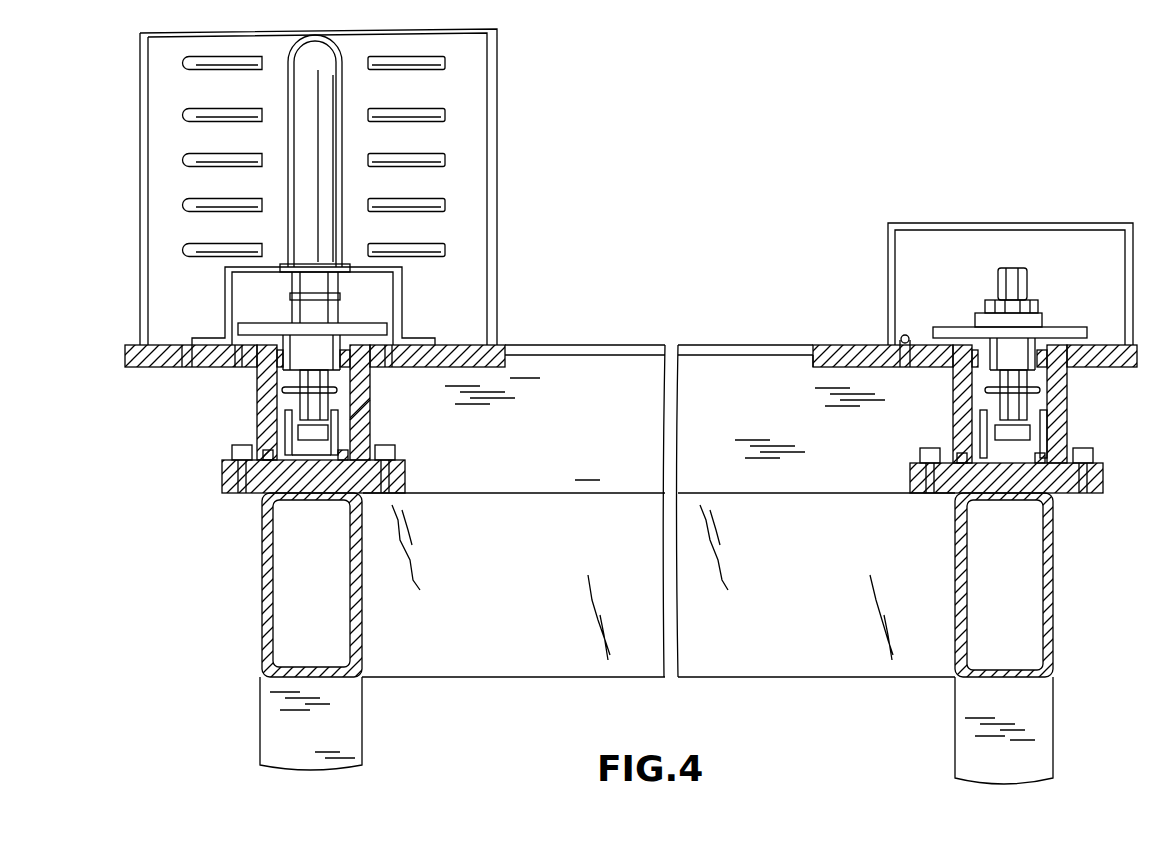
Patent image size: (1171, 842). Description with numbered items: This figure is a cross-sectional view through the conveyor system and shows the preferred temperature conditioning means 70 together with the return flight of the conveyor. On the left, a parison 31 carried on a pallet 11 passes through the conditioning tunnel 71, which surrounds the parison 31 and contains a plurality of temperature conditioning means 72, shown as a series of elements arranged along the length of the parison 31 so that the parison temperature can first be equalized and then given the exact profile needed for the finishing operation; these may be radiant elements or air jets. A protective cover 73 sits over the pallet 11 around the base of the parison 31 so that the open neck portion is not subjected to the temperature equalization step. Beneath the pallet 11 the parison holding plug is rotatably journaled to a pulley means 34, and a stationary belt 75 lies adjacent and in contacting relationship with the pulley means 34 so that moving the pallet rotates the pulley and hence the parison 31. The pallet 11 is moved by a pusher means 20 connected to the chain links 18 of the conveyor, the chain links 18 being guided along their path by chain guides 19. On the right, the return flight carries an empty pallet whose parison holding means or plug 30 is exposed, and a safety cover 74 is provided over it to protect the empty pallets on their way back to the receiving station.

The temperature conditioning means 70 is at (498, 118).
The conditioning tunnel 71 is at (140, 163).
The temperature conditioning means 72 is at (185, 113).
The parison 31 is at (342, 104).
The protective cover 73 is at (405, 306).
The pallet 11 is at (265, 323).
The pulley means 34 is at (257, 408).
The stationary belt 75 is at (338, 390).
The chain guide 19 is at (263, 448).
The chain link 18 is at (370, 426).
The safety cover 74 is at (888, 270).
The parison holding means 30 is at (998, 282).
The pusher means 20 is at (1027, 400).